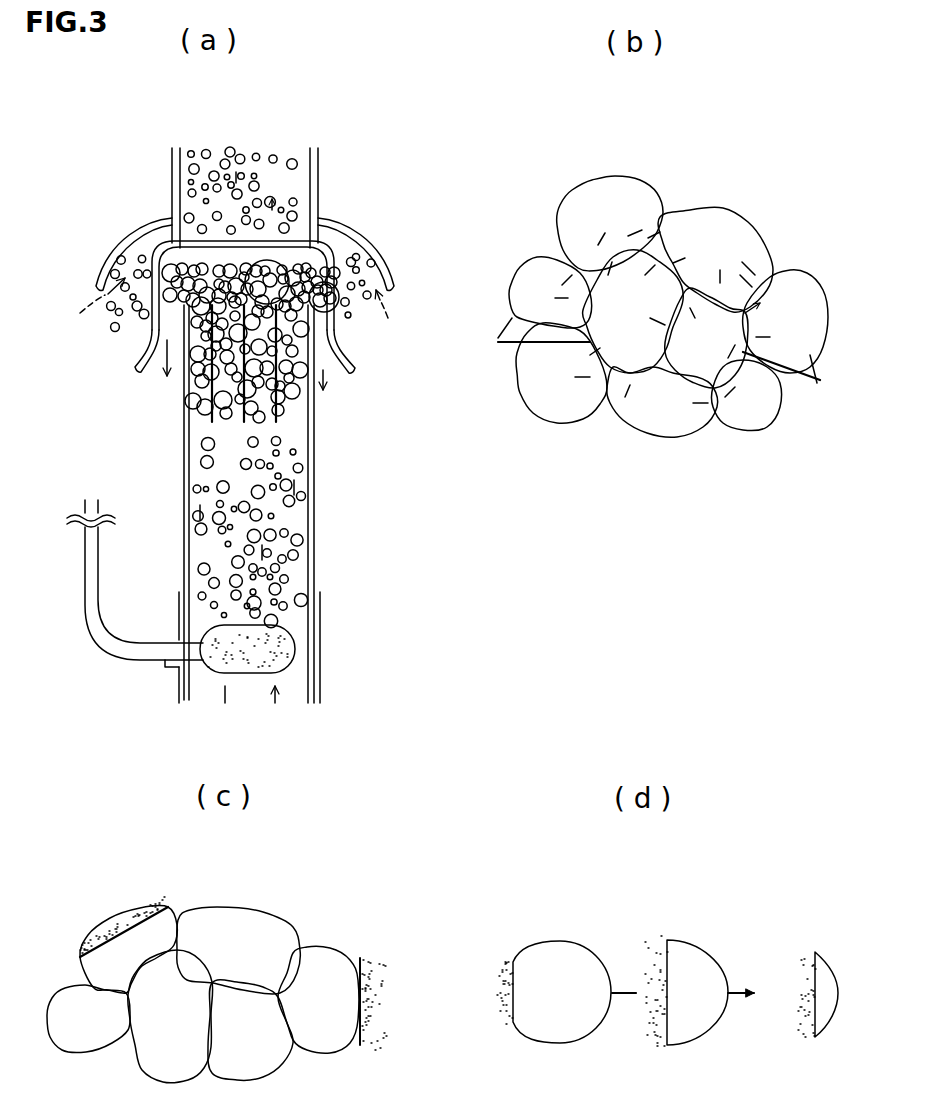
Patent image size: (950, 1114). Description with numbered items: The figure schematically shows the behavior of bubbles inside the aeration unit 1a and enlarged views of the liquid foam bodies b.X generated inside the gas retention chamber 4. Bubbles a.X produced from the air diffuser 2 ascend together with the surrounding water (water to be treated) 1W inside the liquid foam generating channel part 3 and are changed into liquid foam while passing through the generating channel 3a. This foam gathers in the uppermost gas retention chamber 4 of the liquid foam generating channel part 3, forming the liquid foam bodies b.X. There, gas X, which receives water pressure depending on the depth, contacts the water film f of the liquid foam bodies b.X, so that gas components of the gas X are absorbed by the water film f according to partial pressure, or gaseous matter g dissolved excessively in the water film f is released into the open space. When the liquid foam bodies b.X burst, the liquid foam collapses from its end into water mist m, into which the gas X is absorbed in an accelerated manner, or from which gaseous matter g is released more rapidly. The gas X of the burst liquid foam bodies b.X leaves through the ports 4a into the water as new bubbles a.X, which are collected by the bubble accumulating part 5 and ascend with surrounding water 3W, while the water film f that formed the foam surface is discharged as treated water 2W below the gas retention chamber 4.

The aeration unit 1a is at (160, 126).
The bubble accumulating part 5 is at (150, 228).
The gas retention chamber 4 is at (145, 262).
The ports 4a is at (148, 328).
The liquid foam generating channel part 3 is at (313, 485).
The generating channel 3a is at (213, 402).
The air diffuser 2 is at (207, 668).
The surrounding water (water to be treated) 1W is at (256, 715).
The treated water 2W is at (223, 387).
The surrounding water 3W is at (252, 316).
The gas X is at (92, 490).
The bubbles a.X is at (353, 260).
The liquid foam bodies b.X is at (247, 265).
The gaseous matter g is at (522, 263).
The water film f is at (655, 357).
The water mist m is at (367, 973).